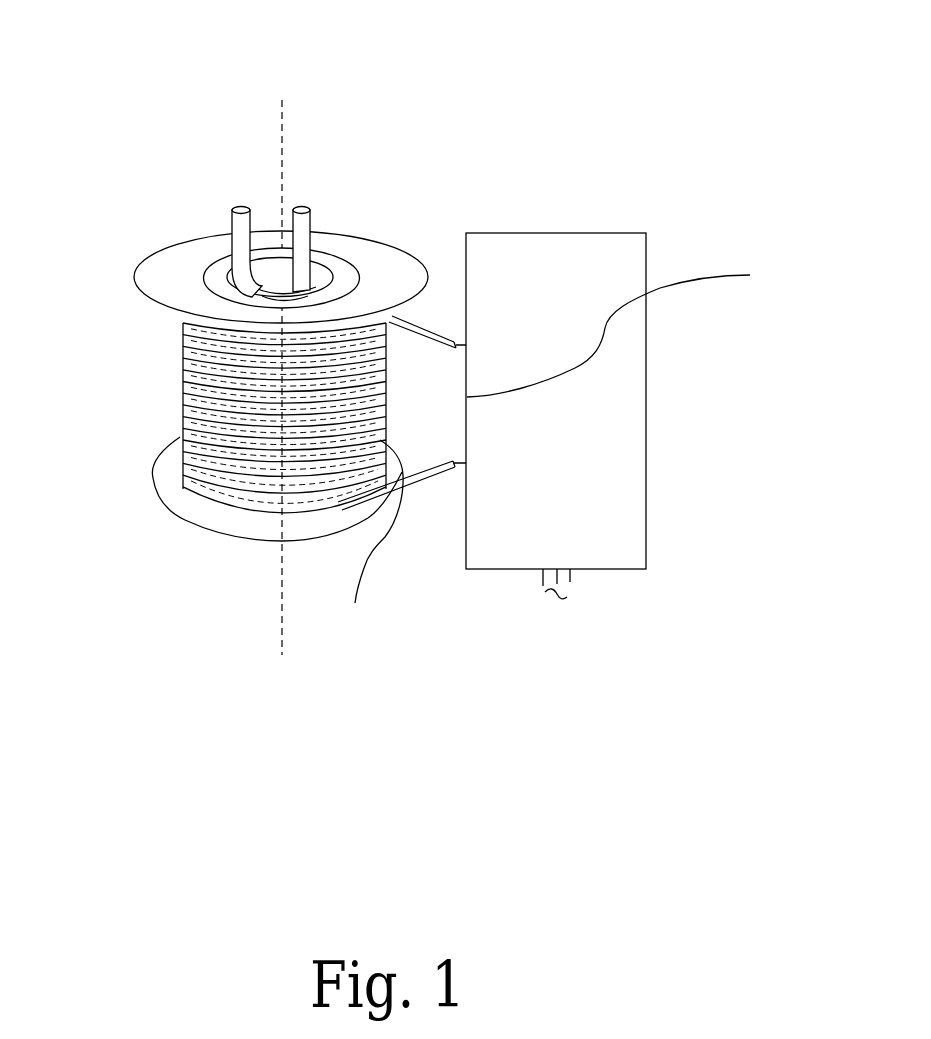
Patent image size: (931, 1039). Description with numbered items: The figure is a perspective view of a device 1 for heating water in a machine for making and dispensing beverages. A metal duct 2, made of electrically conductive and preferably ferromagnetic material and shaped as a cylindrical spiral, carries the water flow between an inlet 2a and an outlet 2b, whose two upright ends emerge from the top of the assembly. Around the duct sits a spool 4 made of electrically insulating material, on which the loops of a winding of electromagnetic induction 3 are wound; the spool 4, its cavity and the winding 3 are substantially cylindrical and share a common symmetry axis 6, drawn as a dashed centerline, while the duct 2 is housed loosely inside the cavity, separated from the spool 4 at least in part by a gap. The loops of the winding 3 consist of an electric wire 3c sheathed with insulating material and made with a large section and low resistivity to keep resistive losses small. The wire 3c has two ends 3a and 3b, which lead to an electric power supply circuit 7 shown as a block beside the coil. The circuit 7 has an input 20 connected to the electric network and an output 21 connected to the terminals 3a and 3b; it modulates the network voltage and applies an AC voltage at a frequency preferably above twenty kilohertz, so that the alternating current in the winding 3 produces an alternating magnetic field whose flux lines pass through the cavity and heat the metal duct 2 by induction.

The device 1 is at (137, 159).
The metal duct 2 is at (330, 270).
The inlet 2a is at (303, 208).
The outlet 2b is at (243, 207).
The winding of electromagnetic induction 3 is at (184, 392).
The end of the wire 3a is at (458, 343).
The end of the wire 3b is at (456, 463).
The electric wire 3c is at (370, 544).
The spool 4 is at (173, 278).
The symmetry axis 6 is at (284, 608).
The electric power supply circuit 7 is at (580, 247).
The input 20 is at (557, 570).
The output 21 is at (631, 327).